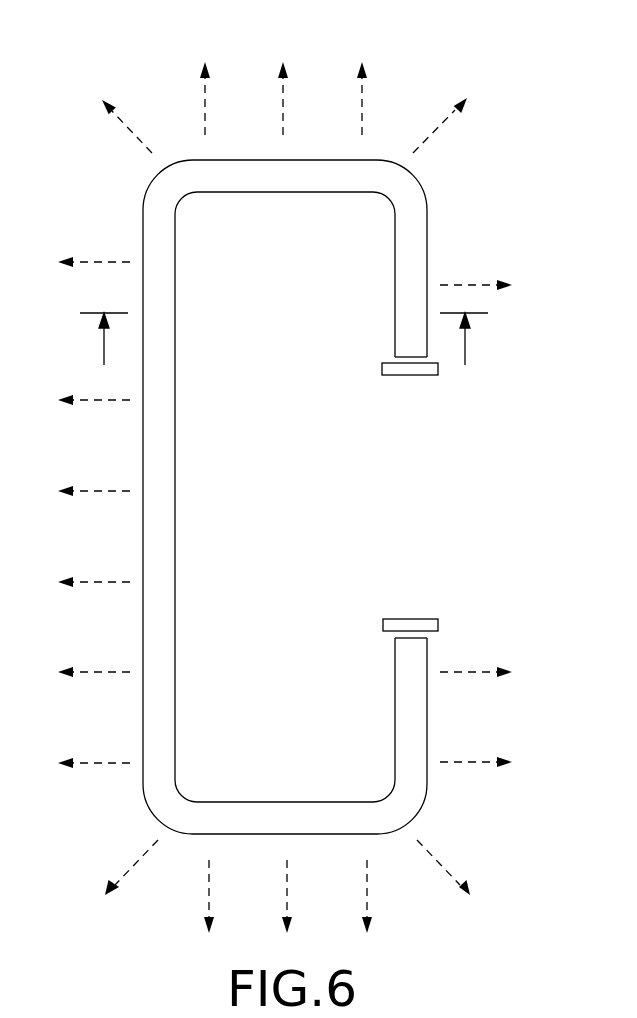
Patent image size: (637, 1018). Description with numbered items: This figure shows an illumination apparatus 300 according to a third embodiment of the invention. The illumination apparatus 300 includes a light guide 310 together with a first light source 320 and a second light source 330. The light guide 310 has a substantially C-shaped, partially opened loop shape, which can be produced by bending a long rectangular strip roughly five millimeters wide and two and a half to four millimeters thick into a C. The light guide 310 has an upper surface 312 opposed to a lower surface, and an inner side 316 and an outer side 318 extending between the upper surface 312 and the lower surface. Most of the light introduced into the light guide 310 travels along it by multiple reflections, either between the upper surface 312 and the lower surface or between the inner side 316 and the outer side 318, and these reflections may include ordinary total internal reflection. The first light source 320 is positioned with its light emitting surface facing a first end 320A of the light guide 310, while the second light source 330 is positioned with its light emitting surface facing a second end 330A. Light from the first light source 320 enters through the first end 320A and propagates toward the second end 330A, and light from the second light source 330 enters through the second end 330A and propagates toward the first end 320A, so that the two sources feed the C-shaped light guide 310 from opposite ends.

The illumination apparatus 300 is at (301, 30).
The light guide 310 is at (385, 147).
The upper surface 312 is at (413, 198).
The inner side 316 is at (392, 248).
The outer side 318 is at (428, 245).
The first light source 320 is at (411, 375).
The first end 320A is at (396, 352).
The second light source 330 is at (410, 619).
The second end 330A is at (397, 645).